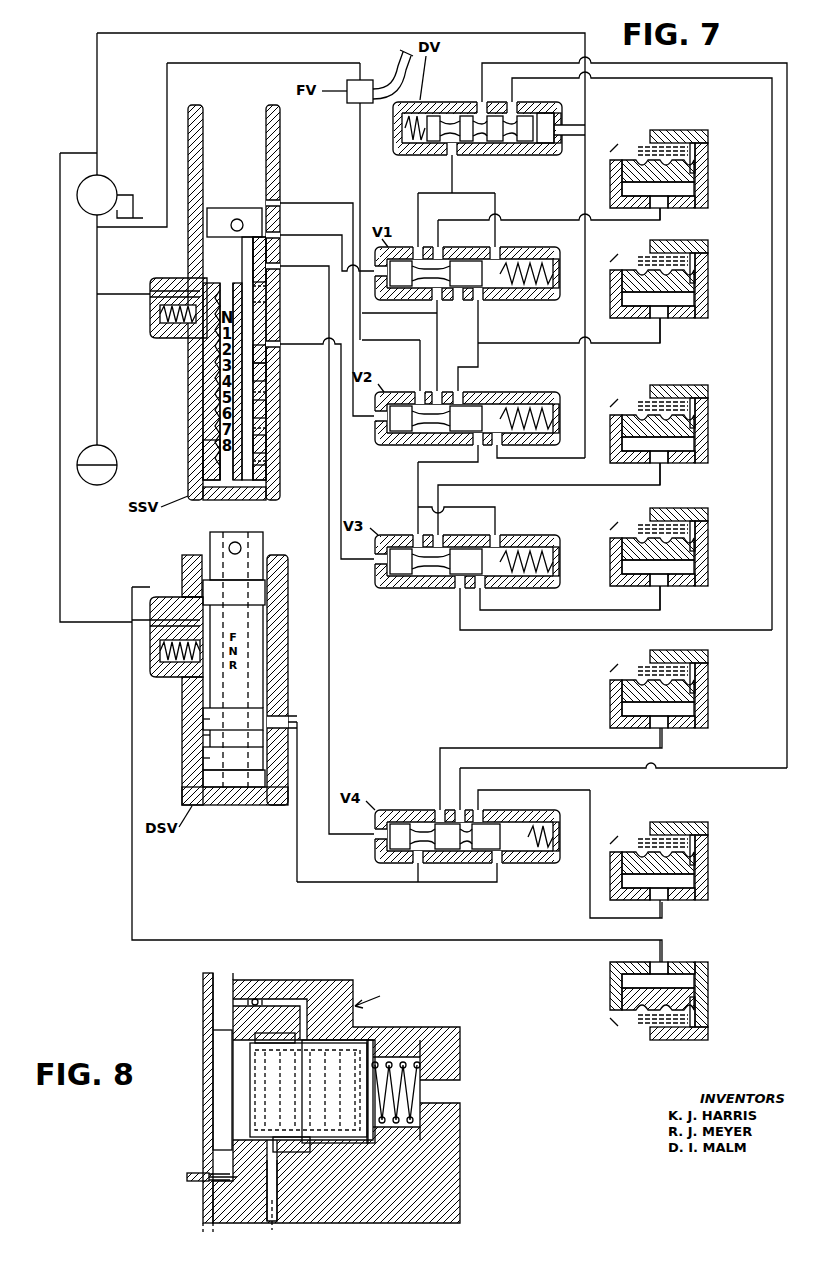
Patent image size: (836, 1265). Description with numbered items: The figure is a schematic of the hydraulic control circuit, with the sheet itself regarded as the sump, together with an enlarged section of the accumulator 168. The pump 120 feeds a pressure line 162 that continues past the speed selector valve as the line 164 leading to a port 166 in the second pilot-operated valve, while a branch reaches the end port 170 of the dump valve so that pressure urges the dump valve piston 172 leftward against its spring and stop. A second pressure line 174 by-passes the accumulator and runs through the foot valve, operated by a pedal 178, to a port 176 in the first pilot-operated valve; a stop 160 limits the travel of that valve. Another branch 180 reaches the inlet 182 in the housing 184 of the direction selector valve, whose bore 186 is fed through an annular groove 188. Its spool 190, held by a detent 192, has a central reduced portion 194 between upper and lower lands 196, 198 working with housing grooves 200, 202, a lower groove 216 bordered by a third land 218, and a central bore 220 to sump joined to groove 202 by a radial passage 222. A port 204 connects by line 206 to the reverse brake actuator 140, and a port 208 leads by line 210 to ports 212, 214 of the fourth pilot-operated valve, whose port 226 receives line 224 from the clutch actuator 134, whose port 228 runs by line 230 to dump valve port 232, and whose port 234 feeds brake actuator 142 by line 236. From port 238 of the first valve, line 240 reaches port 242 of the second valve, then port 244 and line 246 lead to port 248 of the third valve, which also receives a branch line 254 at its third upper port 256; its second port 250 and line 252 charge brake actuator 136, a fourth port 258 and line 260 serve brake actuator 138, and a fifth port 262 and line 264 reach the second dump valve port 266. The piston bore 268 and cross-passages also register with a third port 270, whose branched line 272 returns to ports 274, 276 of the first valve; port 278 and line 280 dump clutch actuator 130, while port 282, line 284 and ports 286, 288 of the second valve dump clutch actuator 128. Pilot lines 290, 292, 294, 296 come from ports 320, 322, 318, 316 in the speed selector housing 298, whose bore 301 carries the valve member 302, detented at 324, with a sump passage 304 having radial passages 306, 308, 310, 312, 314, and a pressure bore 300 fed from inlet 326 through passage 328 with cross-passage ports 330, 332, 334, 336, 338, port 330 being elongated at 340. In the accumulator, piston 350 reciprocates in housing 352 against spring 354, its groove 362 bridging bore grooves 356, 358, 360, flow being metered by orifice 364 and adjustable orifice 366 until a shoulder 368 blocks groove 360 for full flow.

In FIG. 7, the pump 120 is at (112, 452).
In FIG. 7, the piston 128 is at (690, 287).
In FIG. 7, the piston 130 is at (690, 177).
In FIG. 7, the piston 134 is at (690, 870).
In FIG. 7, the piston 136 is at (690, 430).
In FIG. 7, the piston 138 is at (690, 552).
In FIG. 7, the piston 140 is at (690, 981).
In FIG. 7, the piston 142 is at (690, 698).
In FIG. 7, the stop 160 is at (540, 246).
In FIG. 7, the pressure line 162 is at (97, 383).
In FIG. 8, the pressure line 162 is at (278, 1205).
In FIG. 7, the line 164 is at (97, 44).
In FIG. 8, the line 164 is at (225, 975).
In FIG. 7, the port 166 is at (498, 446).
In FIG. 7, the accumulator 168 is at (111, 179).
In FIG. 8, the accumulator 168 is at (383, 995).
In FIG. 7, the end port 170 is at (562, 160).
In FIG. 7, the dump valve piston 172 is at (534, 155).
In FIG. 7, the second pressure line 174 is at (246, 57).
In FIG. 7, the port 176 is at (459, 300).
In FIG. 7, the pedal 178 is at (398, 63).
In FIG. 7, the branch line 180 is at (60, 408).
In FIG. 7, the inlet port 182 is at (167, 630).
In FIG. 7, the housing 184 is at (226, 806).
In FIG. 7, the bore 186 is at (192, 780).
In FIG. 7, the annular groove 188 is at (276, 625).
In FIG. 7, the valve spool 190 is at (213, 540).
In FIG. 7, the detent 192 is at (205, 684).
In FIG. 7, the central reduced portion 194 is at (210, 700).
In FIG. 7, the upper land 196 is at (265, 580).
In FIG. 7, the lower land 198 is at (210, 717).
In FIG. 7, the annular groove 200 is at (186, 575).
In FIG. 7, the annular groove 202 is at (205, 735).
In FIG. 7, the port 204 is at (184, 586).
In FIG. 7, the line 206 is at (132, 590).
In FIG. 7, the port 208 is at (291, 726).
In FIG. 7, the line 210 is at (297, 855).
In FIG. 7, the port 212 is at (417, 863).
In FIG. 7, the port 214 is at (498, 863).
In FIG. 7, the annular groove 216 is at (205, 752).
In FIG. 7, the third land 218 is at (208, 765).
In FIG. 7, the central bore 220 is at (238, 535).
In FIG. 7, the radial passage 222 is at (234, 779).
In FIG. 7, the line 224 is at (590, 806).
In FIG. 7, the port 226 is at (479, 813).
In FIG. 7, the port 228 is at (461, 810).
In FIG. 7, the line 230 is at (651, 770).
In FIG. 7, the port 232 is at (530, 93).
In FIG. 7, the port 234 is at (440, 810).
In FIG. 7, the line 236 is at (440, 748).
In FIG. 7, the port 238 is at (481, 300).
In FIG. 7, the line 240 is at (479, 352).
In FIG. 7, the port 242 is at (466, 391).
In FIG. 7, the port 244 is at (478, 446).
In FIG. 7, the line 246 is at (418, 466).
In FIG. 7, the port 248 is at (420, 535).
In FIG. 7, the second port 250 is at (441, 535).
In FIG. 7, the line 252 is at (607, 485).
In FIG. 7, the branch line 254 is at (496, 507).
In FIG. 7, the third upper port 256 is at (499, 535).
In FIG. 7, the fourth port 258 is at (481, 590).
In FIG. 7, the line 260 is at (601, 610).
In FIG. 7, the fifth port 262 is at (460, 590).
In FIG. 7, the line 264 is at (461, 632).
In FIG. 7, the second port 266 is at (481, 101).
In FIG. 7, the central bore 268 is at (495, 155).
In FIG. 7, the third dump valve port 270 is at (430, 153).
In FIG. 7, the branched line 272 is at (458, 178).
In FIG. 7, the port 274 is at (418, 245).
In FIG. 7, the port 276 is at (515, 246).
In FIG. 7, the port 278 is at (455, 246).
In FIG. 7, the line 280 is at (600, 222).
In FIG. 7, the port 282 is at (420, 314).
In FIG. 7, the line 284 is at (410, 340).
In FIG. 7, the port 286 is at (419, 390).
In FIG. 7, the port 288 is at (438, 390).
In FIG. 7, the pilot line 290 is at (600, 345).
In FIG. 7, the pilot line 292 is at (341, 490).
In FIG. 7, the pilot line 294 is at (305, 235).
In FIG. 7, the pilot line 296 is at (305, 203).
In FIG. 7, the valve housing 298 is at (196, 105).
In FIG. 7, the pressure bore 300 is at (205, 462).
In FIG. 7, the valve bore 301 is at (267, 112).
In FIG. 7, the valve member 302 is at (215, 210).
In FIG. 7, the elongated passage 304 is at (248, 237).
In FIG. 7, the radial passage 306 is at (262, 353).
In FIG. 7, the radial passage 308 is at (262, 370).
In FIG. 7, the radial passage 310 is at (262, 406).
In FIG. 7, the radial passage 312 is at (262, 442).
In FIG. 7, the radial passage 314 is at (262, 472).
In FIG. 7, the port 316 is at (280, 203).
In FIG. 7, the port 318 is at (280, 235).
In FIG. 7, the port 320 is at (280, 266).
In FIG. 7, the port 322 is at (280, 344).
In FIG. 7, the detent 324 is at (182, 336).
In FIG. 7, the inlet 326 is at (178, 285).
In FIG. 7, the passage 328 is at (214, 290).
In FIG. 7, the port 330 is at (261, 289).
In FIG. 7, the port 332 is at (261, 305).
In FIG. 7, the port 334 is at (262, 392).
In FIG. 7, the port 336 is at (262, 427).
In FIG. 7, the port 338 is at (262, 460).
In FIG. 7, the long passage 340 is at (262, 280).
In FIG. 8, the accumulator piston 350 is at (356, 1140).
In FIG. 8, the housing 352 is at (426, 1040).
In FIG. 8, the spring 354 is at (406, 1128).
In FIG. 8, the annular groove 356 is at (213, 1034).
In FIG. 8, the annular groove 358 is at (276, 1162).
In FIG. 8, the annular groove 360 is at (310, 1040).
In FIG. 8, the annular groove 362 is at (275, 1029).
In FIG. 8, the orifice 364 is at (258, 998).
In FIG. 8, the adjustable orifice 366 is at (210, 1181).
In FIG. 8, the shoulder 368 is at (296, 1146).